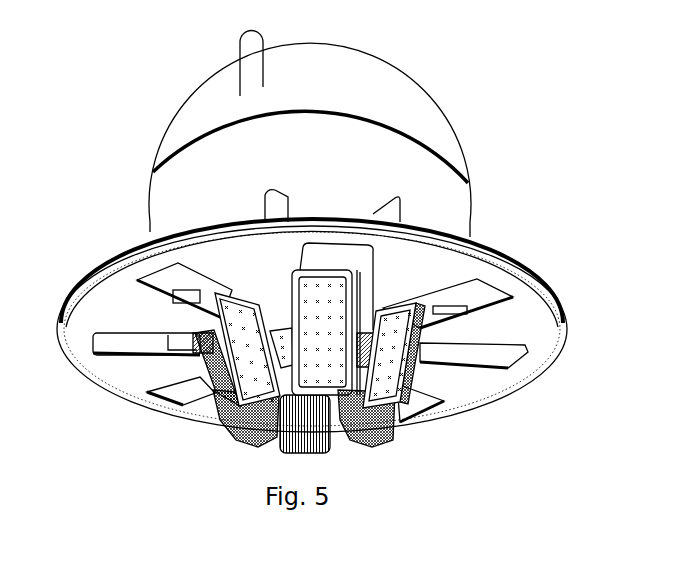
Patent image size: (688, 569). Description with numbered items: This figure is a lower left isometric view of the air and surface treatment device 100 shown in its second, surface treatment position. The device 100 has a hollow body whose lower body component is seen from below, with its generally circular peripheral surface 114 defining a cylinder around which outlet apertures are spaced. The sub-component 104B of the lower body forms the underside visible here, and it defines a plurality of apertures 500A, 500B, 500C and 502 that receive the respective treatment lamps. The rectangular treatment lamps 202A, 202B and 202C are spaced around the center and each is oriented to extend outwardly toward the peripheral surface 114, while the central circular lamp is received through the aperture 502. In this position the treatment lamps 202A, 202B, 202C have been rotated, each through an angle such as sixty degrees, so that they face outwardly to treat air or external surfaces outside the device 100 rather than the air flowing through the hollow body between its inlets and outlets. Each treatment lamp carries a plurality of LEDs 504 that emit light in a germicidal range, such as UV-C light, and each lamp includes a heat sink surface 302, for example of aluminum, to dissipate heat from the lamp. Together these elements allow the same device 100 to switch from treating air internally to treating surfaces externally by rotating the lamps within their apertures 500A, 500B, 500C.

The air and surface treatment device 100 is at (183, 86).
The peripheral surface 114 is at (95, 268).
The lower body sub-component 104B is at (138, 317).
The aperture 500A is at (178, 263).
The aperture 500B is at (332, 244).
The aperture 500C is at (504, 283).
The rectangular treatment lamp 202A is at (237, 377).
The rectangular treatment lamp 202B is at (346, 306).
The rectangular treatment lamp 202C is at (417, 334).
The aperture 502 is at (290, 329).
The LED 504 is at (401, 362).
The heat sink surface 302 is at (367, 437).